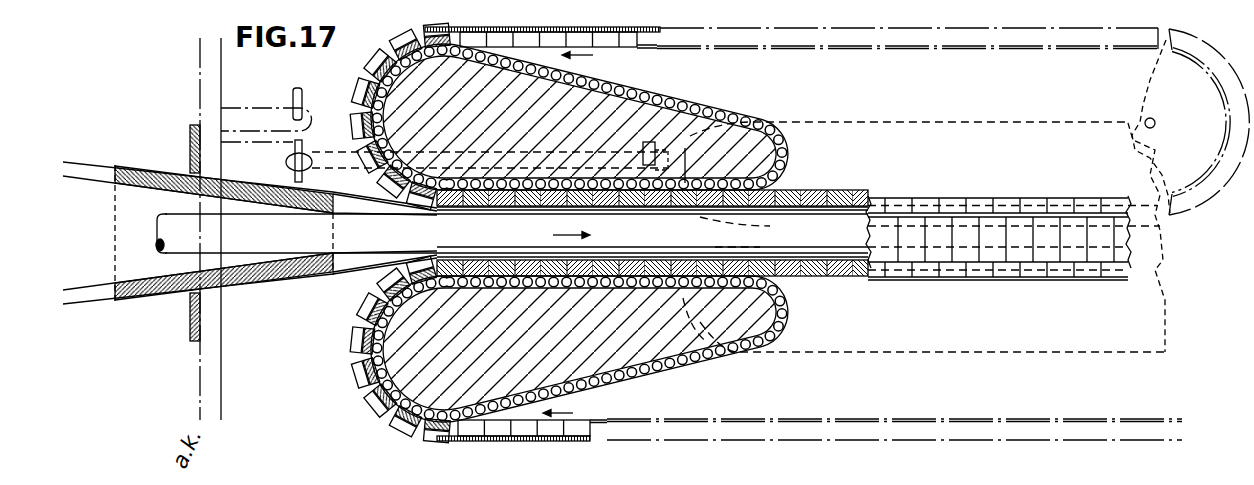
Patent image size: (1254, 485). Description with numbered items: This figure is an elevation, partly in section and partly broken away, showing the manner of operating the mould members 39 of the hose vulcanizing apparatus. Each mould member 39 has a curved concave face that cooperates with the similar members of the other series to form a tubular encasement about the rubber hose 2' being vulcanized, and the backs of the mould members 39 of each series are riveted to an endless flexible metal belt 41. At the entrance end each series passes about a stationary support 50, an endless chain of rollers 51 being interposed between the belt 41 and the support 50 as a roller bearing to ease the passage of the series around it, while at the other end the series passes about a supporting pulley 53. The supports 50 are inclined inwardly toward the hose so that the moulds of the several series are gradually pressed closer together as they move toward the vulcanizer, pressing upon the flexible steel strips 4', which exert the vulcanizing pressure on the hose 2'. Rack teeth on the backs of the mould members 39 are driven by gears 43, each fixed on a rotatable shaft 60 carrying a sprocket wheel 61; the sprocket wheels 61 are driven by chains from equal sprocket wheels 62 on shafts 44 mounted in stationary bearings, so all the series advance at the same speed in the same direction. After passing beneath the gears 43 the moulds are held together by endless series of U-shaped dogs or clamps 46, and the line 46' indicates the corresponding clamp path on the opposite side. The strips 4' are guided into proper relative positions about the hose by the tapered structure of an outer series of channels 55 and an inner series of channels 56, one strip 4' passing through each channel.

The rubber hose 2' is at (259, 258).
The flexible steel strips 4' is at (131, 233).
The mould members 39 is at (358, 91).
The endless flexible metal belt 41 is at (787, 48).
The gears 43 is at (632, 207).
The shafts 44 is at (286, 160).
The U-shaped dogs or clamps 46 is at (909, 118).
The path line 46' is at (924, 337).
The stationary support 50 is at (606, 116).
The endless chain of rollers 51 is at (685, 148).
The supporting pulley 53 is at (1188, 190).
The outer series of conduits or channels 55 is at (144, 172).
The inner series of conduits or channels 56 is at (144, 187).
The rotatable shaft 60 is at (657, 160).
The sprocket wheel 61 is at (664, 165).
The sprocket wheels 62 is at (302, 148).